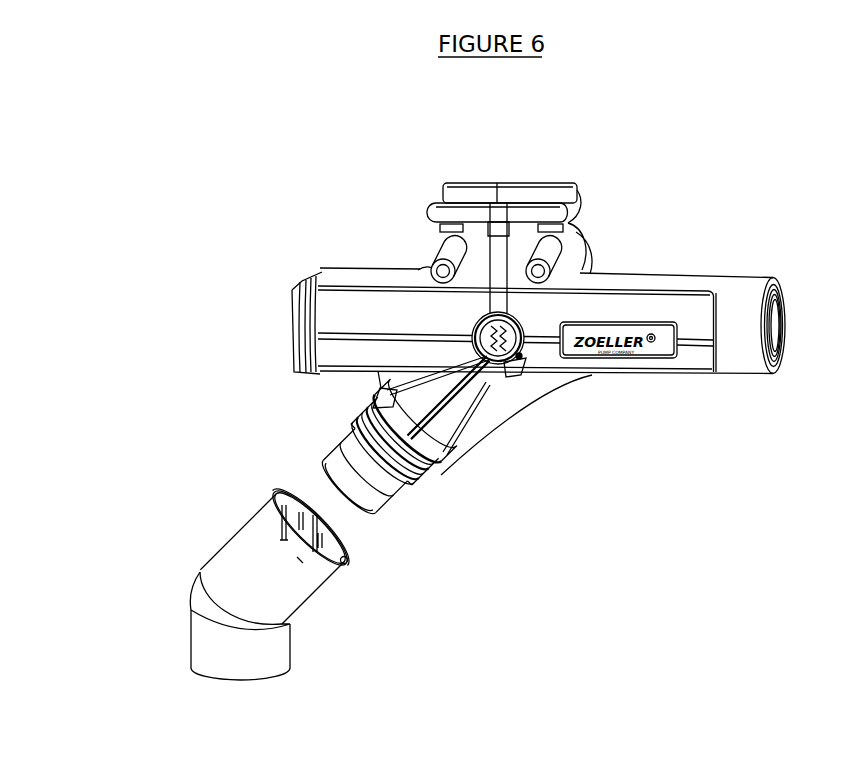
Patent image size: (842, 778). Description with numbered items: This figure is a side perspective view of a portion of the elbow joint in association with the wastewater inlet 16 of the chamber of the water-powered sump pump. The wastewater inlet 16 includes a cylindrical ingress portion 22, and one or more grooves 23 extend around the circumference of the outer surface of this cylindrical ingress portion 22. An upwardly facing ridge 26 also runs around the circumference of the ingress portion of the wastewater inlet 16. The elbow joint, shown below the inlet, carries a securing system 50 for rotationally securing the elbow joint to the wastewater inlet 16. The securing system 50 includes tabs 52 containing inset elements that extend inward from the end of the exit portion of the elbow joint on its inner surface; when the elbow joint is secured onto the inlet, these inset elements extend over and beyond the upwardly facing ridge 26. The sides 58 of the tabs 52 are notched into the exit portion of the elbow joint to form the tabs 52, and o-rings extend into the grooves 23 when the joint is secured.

The wastewater inlet 16 is at (366, 494).
The cylindrical ingress portion 22 is at (318, 453).
The grooves 23 is at (360, 418).
The upwardly facing ridge 26 is at (430, 445).
The securing system 50 is at (220, 509).
The tabs 52 is at (262, 510).
The sides of the tabs 58 is at (347, 563).